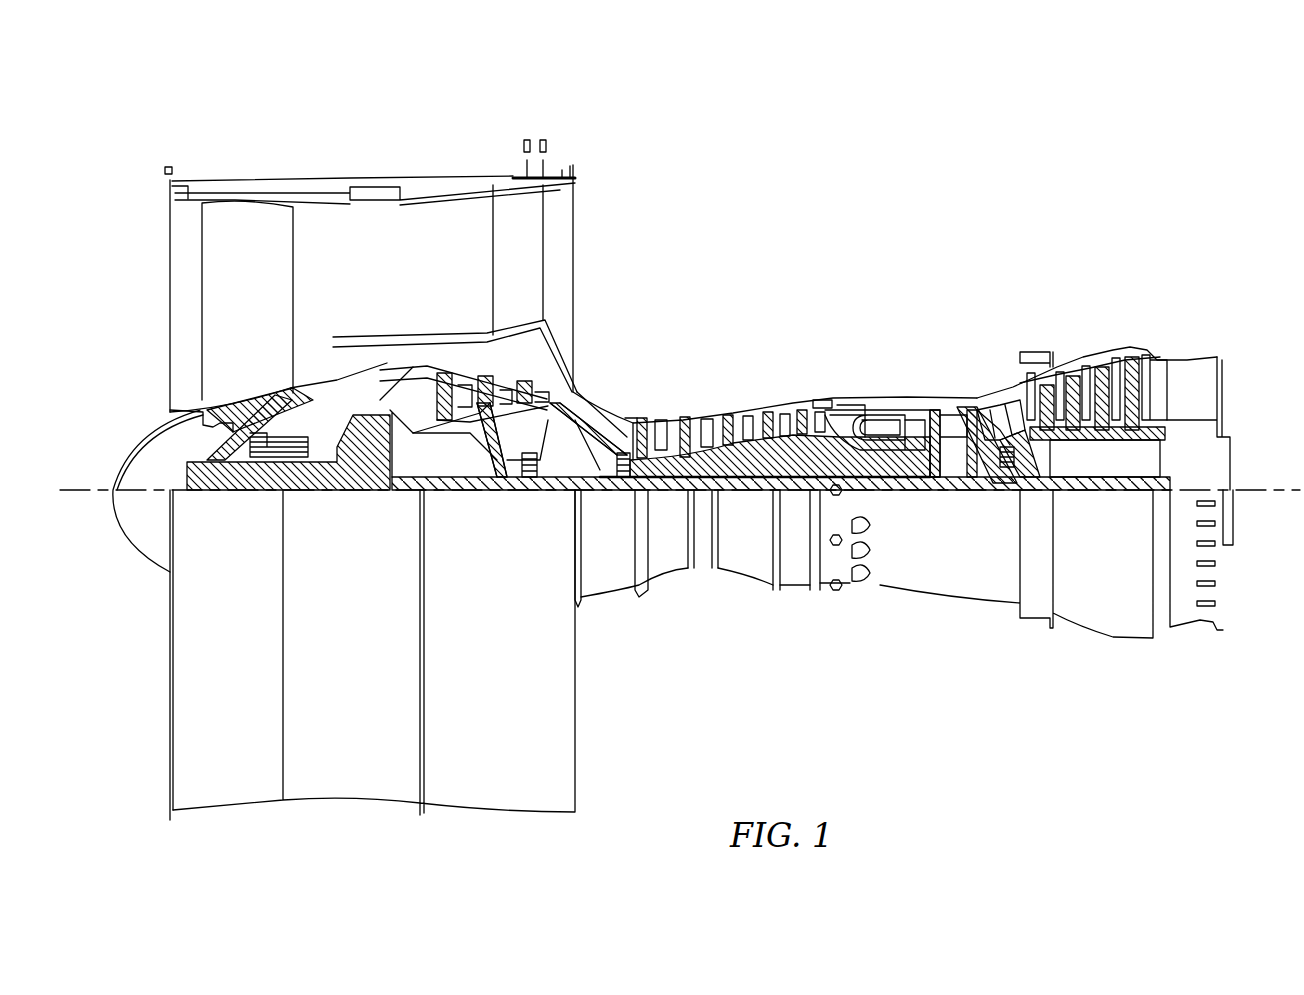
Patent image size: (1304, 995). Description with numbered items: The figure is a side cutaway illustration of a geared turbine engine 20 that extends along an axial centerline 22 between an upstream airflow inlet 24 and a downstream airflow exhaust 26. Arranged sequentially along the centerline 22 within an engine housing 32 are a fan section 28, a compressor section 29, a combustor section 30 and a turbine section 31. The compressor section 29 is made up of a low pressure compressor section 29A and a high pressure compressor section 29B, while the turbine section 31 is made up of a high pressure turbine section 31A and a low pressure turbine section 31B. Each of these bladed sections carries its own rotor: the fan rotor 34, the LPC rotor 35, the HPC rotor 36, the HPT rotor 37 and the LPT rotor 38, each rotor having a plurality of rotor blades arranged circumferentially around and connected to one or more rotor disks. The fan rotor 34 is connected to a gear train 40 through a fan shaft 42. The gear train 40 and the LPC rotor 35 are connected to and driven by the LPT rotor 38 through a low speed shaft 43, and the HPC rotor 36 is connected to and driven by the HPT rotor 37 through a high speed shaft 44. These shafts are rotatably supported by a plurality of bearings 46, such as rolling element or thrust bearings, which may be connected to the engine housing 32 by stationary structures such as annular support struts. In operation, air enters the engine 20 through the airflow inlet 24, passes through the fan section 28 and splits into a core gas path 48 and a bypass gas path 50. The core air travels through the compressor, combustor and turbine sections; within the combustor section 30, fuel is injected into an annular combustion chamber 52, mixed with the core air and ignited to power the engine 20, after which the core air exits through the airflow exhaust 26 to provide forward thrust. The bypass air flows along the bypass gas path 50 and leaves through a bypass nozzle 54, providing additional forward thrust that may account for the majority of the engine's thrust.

The geared turbine engine 20 is at (143, 110).
The axial centerline 22 is at (1291, 510).
The upstream airflow inlet 24 is at (170, 247).
The downstream airflow exhaust 26 is at (1227, 390).
The fan section 28 is at (173, 159).
The compressor section 29 is at (412, 84).
The low pressure compressor section 29A is at (578, 139).
The high pressure compressor section 29B is at (795, 330).
The combustor section 30 is at (920, 330).
The turbine section 31 is at (925, 262).
The high pressure turbine section 31A is at (923, 330).
The low pressure turbine section 31B is at (1180, 330).
The engine housing 32 is at (592, 620).
The fan rotor 34 is at (195, 420).
The LPC rotor 35 is at (480, 440).
The HPC rotor 36 is at (740, 452).
The HPT rotor 37 is at (948, 468).
The LPT rotor 38 is at (1095, 437).
The gear train 40 is at (373, 492).
The fan shaft 42 is at (207, 493).
The low speed shaft 43 is at (1107, 493).
The high speed shaft 44 is at (885, 467).
The bearings 46 is at (273, 480).
The core gas path 48 is at (602, 418).
The bypass gas path 50 is at (396, 269).
The combustion chamber 52 is at (877, 425).
The bypass nozzle 54 is at (573, 240).